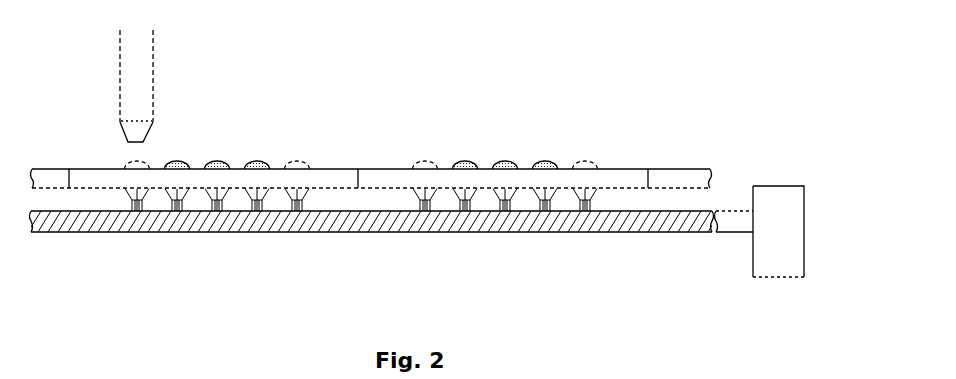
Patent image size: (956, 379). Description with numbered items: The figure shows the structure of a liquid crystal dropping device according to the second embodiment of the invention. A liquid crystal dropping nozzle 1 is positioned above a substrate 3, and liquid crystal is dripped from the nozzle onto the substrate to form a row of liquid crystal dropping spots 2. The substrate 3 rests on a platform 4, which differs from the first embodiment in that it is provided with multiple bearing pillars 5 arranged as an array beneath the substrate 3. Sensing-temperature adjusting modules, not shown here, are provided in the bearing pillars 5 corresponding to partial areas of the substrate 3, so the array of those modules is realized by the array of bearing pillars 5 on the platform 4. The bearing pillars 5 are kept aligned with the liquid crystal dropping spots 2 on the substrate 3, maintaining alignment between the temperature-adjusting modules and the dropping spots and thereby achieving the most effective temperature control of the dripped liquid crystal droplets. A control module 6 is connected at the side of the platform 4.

The liquid crystal dropping nozzle 1 is at (140, 103).
The liquid crystal dropping spot 2 is at (253, 162).
The substrate 3 is at (637, 169).
The platform 4 is at (435, 220).
The bearing pillar 5 is at (423, 200).
The control module 6 is at (783, 263).